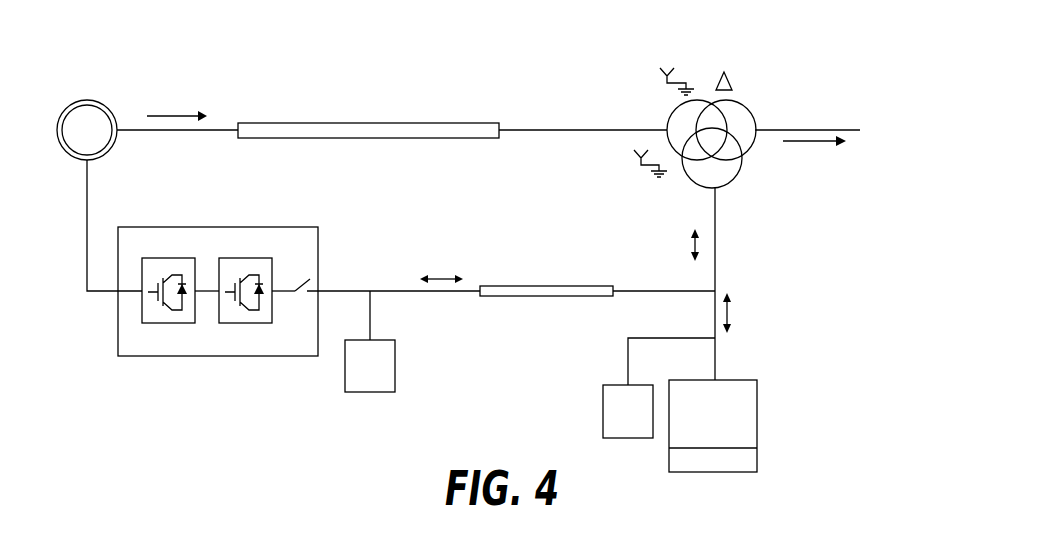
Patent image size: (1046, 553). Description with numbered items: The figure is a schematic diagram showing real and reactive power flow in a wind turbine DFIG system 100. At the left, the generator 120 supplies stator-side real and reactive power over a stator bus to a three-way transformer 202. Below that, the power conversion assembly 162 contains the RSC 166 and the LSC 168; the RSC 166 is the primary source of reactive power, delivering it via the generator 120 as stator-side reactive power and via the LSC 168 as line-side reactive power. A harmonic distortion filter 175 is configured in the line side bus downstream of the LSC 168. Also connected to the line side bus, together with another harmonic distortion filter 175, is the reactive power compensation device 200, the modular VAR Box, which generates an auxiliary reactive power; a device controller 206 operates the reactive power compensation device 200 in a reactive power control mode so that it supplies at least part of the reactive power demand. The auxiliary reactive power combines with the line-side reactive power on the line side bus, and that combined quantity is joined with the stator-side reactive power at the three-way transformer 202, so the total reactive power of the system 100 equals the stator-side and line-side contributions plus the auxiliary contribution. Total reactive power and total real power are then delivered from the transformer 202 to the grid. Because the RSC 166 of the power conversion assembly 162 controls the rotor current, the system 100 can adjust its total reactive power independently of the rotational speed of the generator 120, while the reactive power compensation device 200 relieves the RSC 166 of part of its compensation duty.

The wind turbine DFIG system 100 is at (475, 197).
The generator 120 is at (105, 104).
The power conversion assembly 162 is at (208, 327).
The RSC 166 is at (146, 329).
The LSC 168 is at (267, 329).
The harmonic distortion filter 175 is at (499, 398).
The reactive power compensation device 200 is at (738, 453).
The three-way transformer 202 is at (695, 112).
The device controller 206 is at (722, 487).